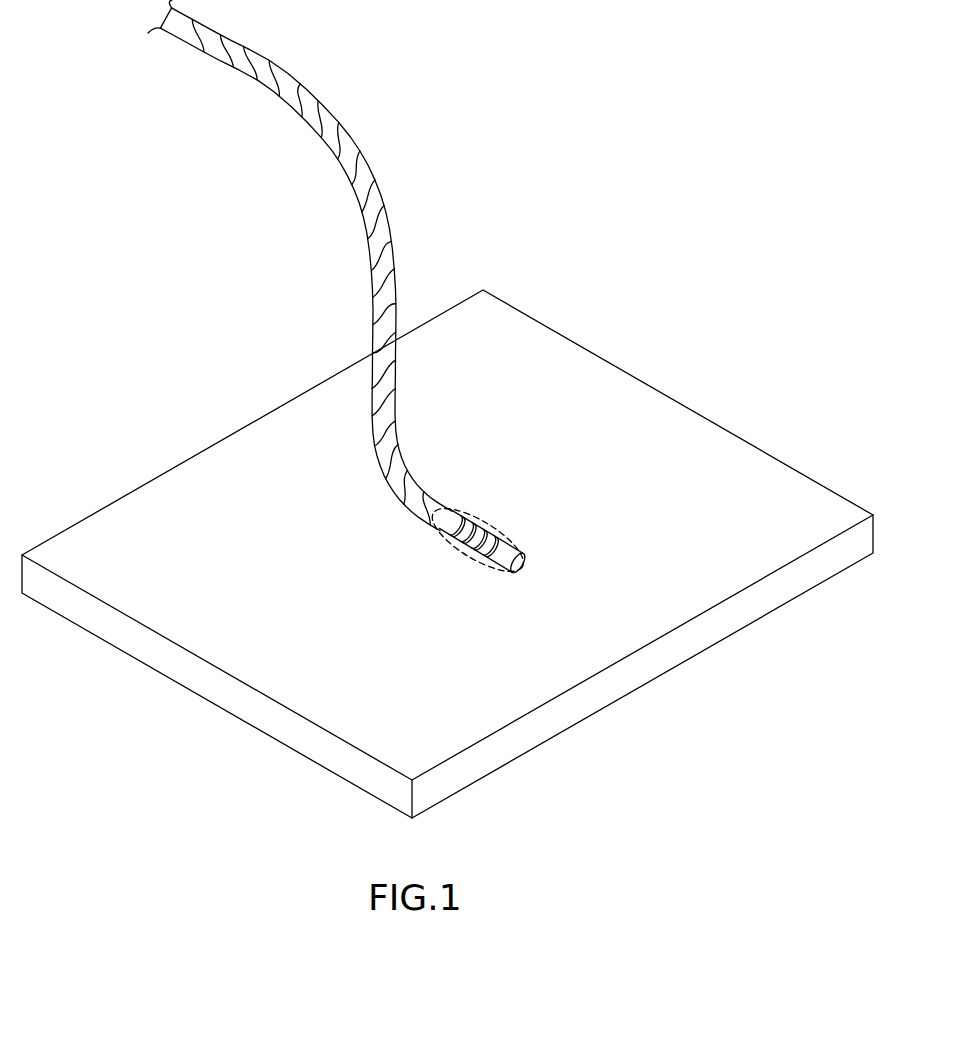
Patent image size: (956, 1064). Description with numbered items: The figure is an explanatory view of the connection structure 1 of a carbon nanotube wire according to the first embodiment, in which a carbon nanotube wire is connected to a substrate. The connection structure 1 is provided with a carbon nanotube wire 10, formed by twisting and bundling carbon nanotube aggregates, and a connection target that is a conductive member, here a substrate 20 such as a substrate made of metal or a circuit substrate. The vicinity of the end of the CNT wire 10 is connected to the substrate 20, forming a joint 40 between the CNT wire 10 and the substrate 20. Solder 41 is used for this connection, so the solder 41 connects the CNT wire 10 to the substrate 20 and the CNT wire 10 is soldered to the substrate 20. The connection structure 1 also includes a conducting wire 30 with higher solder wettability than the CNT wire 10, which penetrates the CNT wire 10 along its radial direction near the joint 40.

The connection structure 1 is at (620, 300).
The carbon nanotube wire 10 is at (376, 210).
The substrate 20 is at (718, 458).
The conducting wire 30 is at (440, 520).
The joint 40 is at (487, 577).
The solder 41 is at (483, 520).